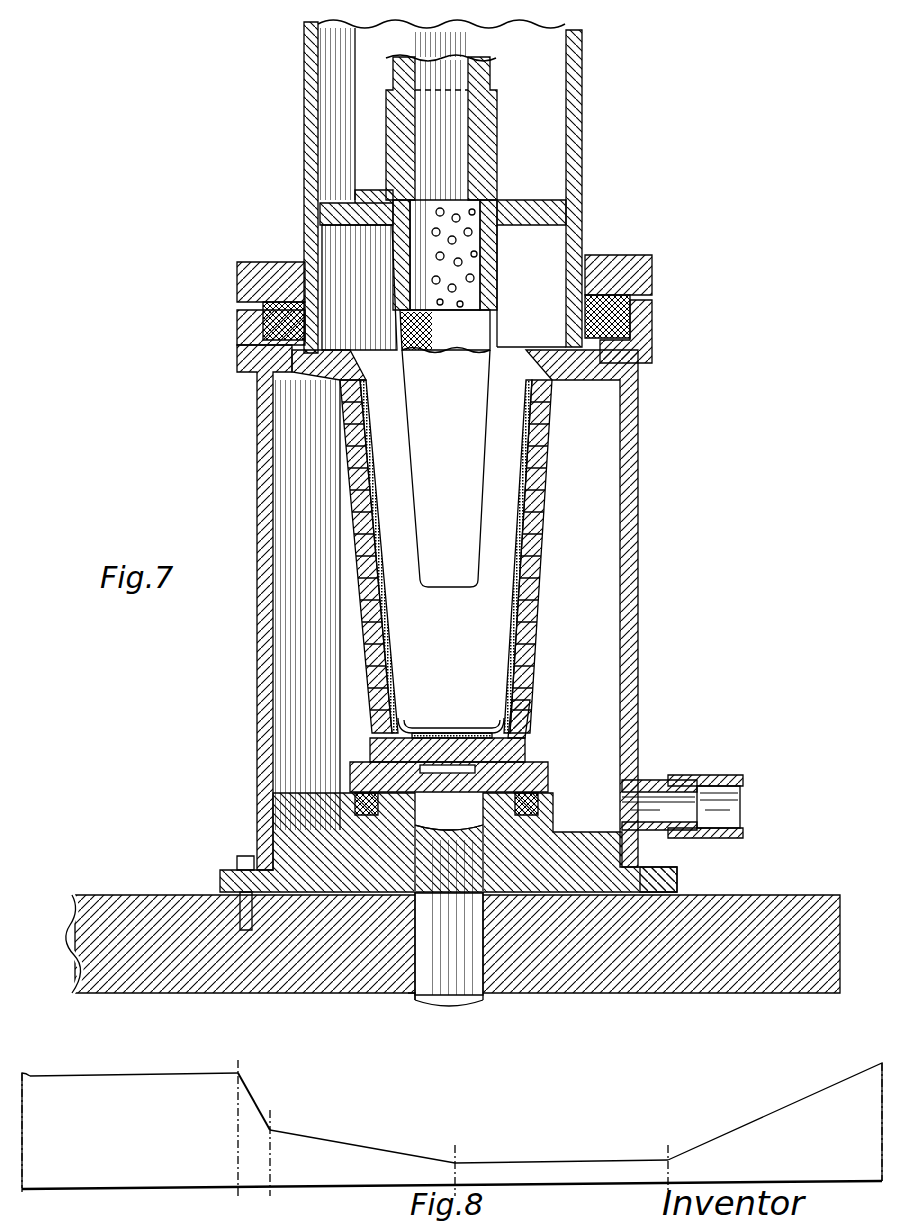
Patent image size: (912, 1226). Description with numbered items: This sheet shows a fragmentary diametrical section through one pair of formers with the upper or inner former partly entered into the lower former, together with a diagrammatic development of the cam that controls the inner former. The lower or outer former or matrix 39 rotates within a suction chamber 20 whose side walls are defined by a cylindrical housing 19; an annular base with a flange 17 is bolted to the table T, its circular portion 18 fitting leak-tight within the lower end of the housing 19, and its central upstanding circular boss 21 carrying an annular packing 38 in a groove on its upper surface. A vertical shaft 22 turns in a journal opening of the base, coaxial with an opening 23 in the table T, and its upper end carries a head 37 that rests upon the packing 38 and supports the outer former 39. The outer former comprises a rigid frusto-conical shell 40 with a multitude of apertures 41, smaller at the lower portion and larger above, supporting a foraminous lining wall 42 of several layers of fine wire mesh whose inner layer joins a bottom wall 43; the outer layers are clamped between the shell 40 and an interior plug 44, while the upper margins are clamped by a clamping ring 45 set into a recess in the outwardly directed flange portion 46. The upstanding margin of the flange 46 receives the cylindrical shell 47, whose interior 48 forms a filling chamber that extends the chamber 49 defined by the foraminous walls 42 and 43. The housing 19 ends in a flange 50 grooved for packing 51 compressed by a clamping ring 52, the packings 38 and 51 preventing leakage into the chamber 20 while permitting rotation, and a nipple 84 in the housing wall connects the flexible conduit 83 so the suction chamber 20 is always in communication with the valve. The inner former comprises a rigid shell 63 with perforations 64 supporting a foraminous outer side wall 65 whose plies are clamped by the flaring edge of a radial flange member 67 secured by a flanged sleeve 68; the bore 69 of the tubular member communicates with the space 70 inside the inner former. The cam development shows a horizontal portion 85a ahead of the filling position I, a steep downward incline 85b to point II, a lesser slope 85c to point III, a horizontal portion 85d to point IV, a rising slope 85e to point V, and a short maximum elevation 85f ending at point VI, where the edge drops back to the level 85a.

In FIG. 7, the flange 17 is at (678, 876).
In FIG. 7, the circular portion 18 is at (590, 842).
In FIG. 7, the cylindrical housing 19 is at (640, 665).
In FIG. 7, the suction chamber 20 is at (620, 602).
In FIG. 7, the central upstanding circular boss 21 is at (545, 802).
In FIG. 7, the vertical shaft 22 is at (430, 1002).
In FIG. 7, the opening in the table 23 is at (410, 992).
In FIG. 7, the head 37 is at (525, 742).
In FIG. 7, the annular packing 38 is at (540, 776).
In FIG. 7, the lower or outer former or matrix 39 is at (568, 460).
In FIG. 7, the outer rigid frusto-conical shell 40 is at (528, 722).
In FIG. 7, the apertures 41 is at (528, 590).
In FIG. 7, the foraminous lining wall 42 is at (400, 615).
In FIG. 7, the bottom wall 43 is at (432, 733).
In FIG. 7, the interior plug 44 is at (468, 728).
In FIG. 7, the clamping ring 45 is at (322, 415).
In FIG. 7, the outwardly directed flange portion 46 is at (300, 393).
In FIG. 7, the substantially cylindrical shell 47 is at (310, 170).
In FIG. 7, the filling chamber 48 is at (555, 250).
In FIG. 7, the chamber 49 is at (498, 522).
In FIG. 7, the flange 50 is at (650, 322).
In FIG. 7, the packing 51 is at (630, 302).
In FIG. 7, the clamping ring 52 is at (632, 265).
In FIG. 7, the rigid shell 63 is at (488, 140).
In FIG. 7, the perforations 64 is at (488, 266).
In FIG. 7, the foraminous outer side wall 65 is at (490, 332).
In FIG. 7, the radial flange member 67 is at (550, 200).
In FIG. 7, the flanged sleeve 68 is at (505, 200).
In FIG. 7, the bore 69 is at (455, 65).
In FIG. 7, the space inside the inner former 70 is at (487, 246).
In FIG. 7, the flexible conduit 83 is at (720, 790).
In FIG. 7, the nipple 84 is at (650, 780).
In FIG. 7, the table T is at (770, 900).
In FIG. 8, the substantially horizontal portion of the cam edge 85a is at (134, 1074).
In FIG. 8, the steeply inclined cam edge portion 85b is at (256, 1098).
In FIG. 8, the lesser-slope inclined cam edge portion 85c is at (348, 1142).
In FIG. 8, the substantially horizontal cam edge portion 85d is at (540, 1162).
In FIG. 8, the rising cam edge portion 85e is at (732, 1128).
In FIG. 8, the maximum elevation cam edge portion 85f is at (22, 1073).
In FIG. 8, the filling position I is at (235, 1113).
In FIG. 8, the point II is at (281, 1146).
In FIG. 8, the point III is at (467, 1161).
In FIG. 8, the point IV is at (668, 1158).
In FIG. 8, the point V is at (870, 1109).
In FIG. 8, the point VI is at (38, 1114).